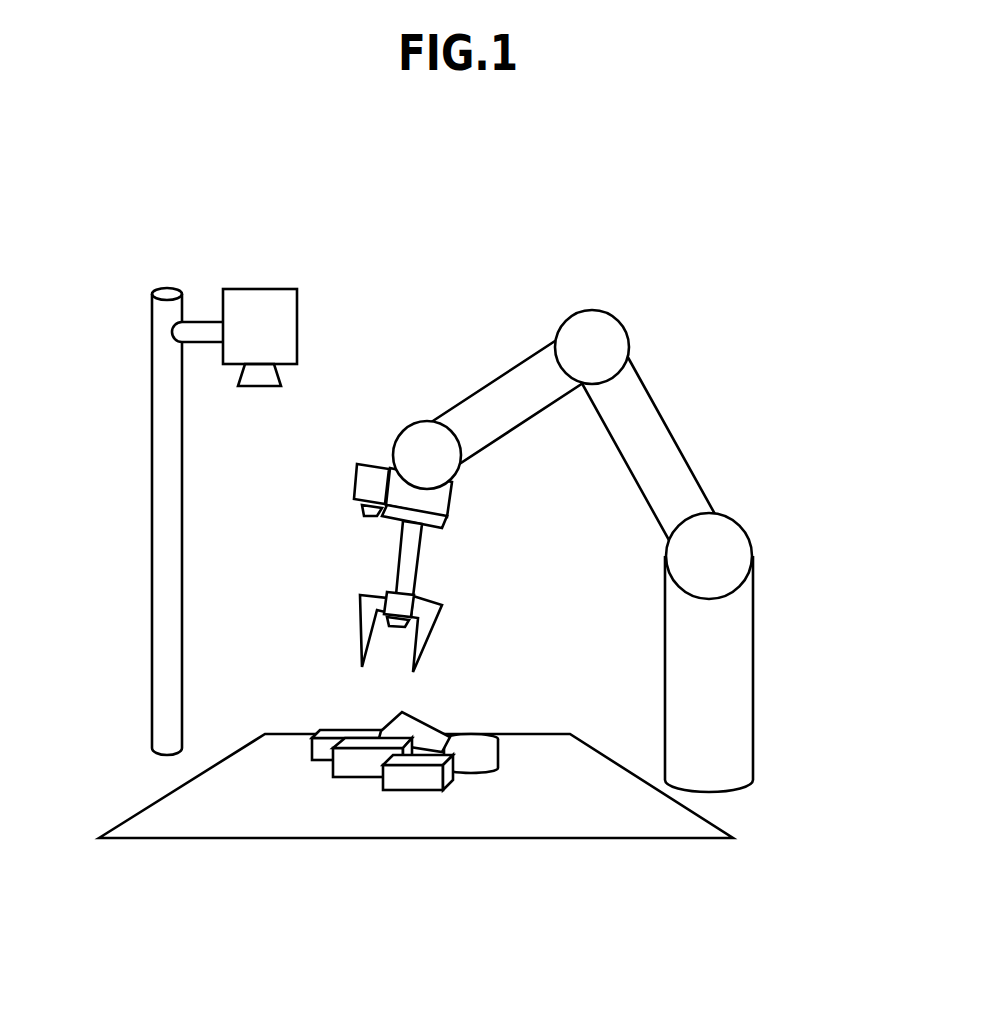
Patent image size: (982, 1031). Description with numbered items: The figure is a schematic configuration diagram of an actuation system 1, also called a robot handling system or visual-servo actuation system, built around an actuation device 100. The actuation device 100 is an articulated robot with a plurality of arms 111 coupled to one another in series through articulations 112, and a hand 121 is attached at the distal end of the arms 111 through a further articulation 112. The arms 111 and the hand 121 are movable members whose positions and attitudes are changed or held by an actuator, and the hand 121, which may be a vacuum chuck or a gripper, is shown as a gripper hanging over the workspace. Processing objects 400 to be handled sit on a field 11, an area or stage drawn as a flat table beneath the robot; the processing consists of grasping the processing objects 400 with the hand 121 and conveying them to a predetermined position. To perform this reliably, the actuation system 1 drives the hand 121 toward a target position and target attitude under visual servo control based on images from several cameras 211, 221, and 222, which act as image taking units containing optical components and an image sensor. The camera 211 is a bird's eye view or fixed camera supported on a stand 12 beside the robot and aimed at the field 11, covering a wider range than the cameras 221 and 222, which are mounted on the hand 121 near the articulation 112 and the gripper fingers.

The actuation system 1 is at (649, 196).
The actuation device 100 is at (586, 300).
The arms 111 is at (493, 390).
The articulations 112 is at (407, 437).
The hand 121 is at (443, 627).
The bird's eye view camera 211 is at (283, 332).
The camera 221 is at (365, 483).
The camera 222 is at (380, 597).
The processing objects 400 is at (447, 732).
The field 11 is at (233, 817).
The stand 12 is at (165, 653).